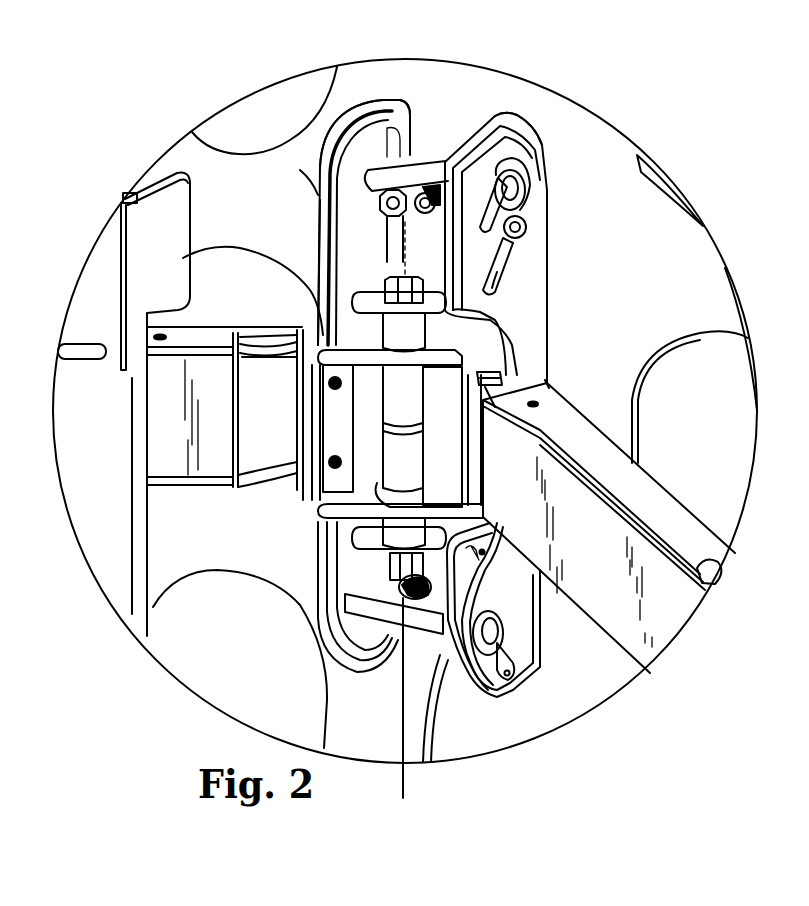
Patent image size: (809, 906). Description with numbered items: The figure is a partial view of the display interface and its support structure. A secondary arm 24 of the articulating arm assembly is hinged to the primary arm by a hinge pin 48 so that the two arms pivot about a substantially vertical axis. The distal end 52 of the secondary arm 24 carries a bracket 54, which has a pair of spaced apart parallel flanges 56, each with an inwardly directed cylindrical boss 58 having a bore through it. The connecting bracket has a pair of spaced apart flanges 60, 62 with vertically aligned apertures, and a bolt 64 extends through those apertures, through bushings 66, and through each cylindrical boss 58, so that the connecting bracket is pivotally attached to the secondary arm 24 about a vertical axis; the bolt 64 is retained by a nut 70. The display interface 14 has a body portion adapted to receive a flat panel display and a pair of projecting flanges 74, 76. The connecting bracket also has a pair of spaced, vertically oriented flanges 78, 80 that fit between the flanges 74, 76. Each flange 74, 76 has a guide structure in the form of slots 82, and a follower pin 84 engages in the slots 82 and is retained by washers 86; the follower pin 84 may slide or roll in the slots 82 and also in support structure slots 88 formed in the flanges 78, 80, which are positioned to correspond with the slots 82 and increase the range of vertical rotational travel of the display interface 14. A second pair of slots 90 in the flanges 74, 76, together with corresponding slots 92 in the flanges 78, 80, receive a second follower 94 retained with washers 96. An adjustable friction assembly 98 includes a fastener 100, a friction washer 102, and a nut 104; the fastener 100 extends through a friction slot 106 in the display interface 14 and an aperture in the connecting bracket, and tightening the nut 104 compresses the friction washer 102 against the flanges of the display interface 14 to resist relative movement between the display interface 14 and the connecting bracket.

The display interface 14 is at (718, 300).
The secondary arm 24 is at (165, 468).
The hinge pin 48 is at (716, 571).
The distal end 52 is at (220, 340).
The bracket 54 is at (442, 447).
The flange 56 is at (360, 360).
The cylindrical boss 58 is at (403, 429).
The flange 60 is at (383, 297).
The flange 62 is at (370, 547).
The bolt 64 is at (408, 268).
The bushing 66 is at (385, 323).
The nut 70 is at (387, 567).
The flange 74 is at (321, 200).
The flange 76 is at (510, 157).
The flange 78 is at (323, 187).
The flange 80 is at (511, 122).
The slot 82 is at (523, 207).
The follower pin 84 is at (430, 172).
The washer 86 is at (530, 173).
The support structure slot 88 is at (393, 113).
The slot 90 is at (508, 675).
The slot 92 is at (330, 673).
The second follower 94 is at (403, 667).
The washer 96 is at (490, 620).
The adjustable friction assembly 98 is at (377, 217).
The fastener 100 is at (527, 223).
The friction washer 102 is at (508, 253).
The nut 104 is at (410, 220).
The friction slot 106 is at (497, 277).